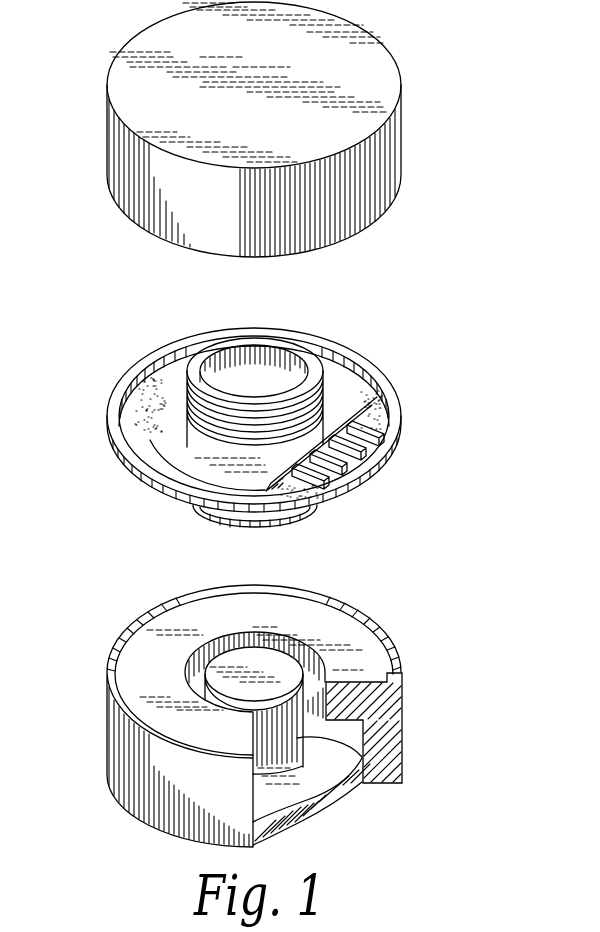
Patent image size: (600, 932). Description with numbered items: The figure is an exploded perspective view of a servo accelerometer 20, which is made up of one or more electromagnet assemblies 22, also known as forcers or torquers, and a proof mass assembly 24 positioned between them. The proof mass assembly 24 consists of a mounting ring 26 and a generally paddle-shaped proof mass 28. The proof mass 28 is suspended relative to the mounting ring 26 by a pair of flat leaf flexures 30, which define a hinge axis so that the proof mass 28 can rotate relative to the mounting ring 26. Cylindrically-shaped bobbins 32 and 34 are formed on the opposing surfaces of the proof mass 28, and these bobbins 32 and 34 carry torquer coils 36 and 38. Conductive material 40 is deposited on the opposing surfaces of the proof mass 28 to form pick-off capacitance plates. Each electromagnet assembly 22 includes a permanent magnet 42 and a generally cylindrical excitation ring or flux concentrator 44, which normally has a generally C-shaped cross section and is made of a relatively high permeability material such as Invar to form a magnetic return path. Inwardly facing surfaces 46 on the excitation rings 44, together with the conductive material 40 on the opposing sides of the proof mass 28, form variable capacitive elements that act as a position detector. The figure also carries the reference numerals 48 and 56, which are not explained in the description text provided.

The servo accelerometer 20 is at (425, 38).
The electromagnet assembly 22 is at (294, 542).
The proof mass assembly 24 is at (305, 424).
The mounting ring 26 is at (377, 390).
The proof mass 28 is at (140, 458).
The flat leaf flexures 30 is at (398, 442).
The bobbin 32 is at (300, 352).
The bobbin 34 is at (228, 522).
The torquer coil 36 is at (305, 520).
The torquer coil 38 is at (174, 390).
The conductive material 40 is at (141, 368).
The permanent magnet 42 is at (364, 786).
The excitation ring 44 is at (112, 745).
The inwardly facing surface 46 is at (147, 662).
The bottom floor 48 is at (289, 776).
The central post 56 is at (280, 665).